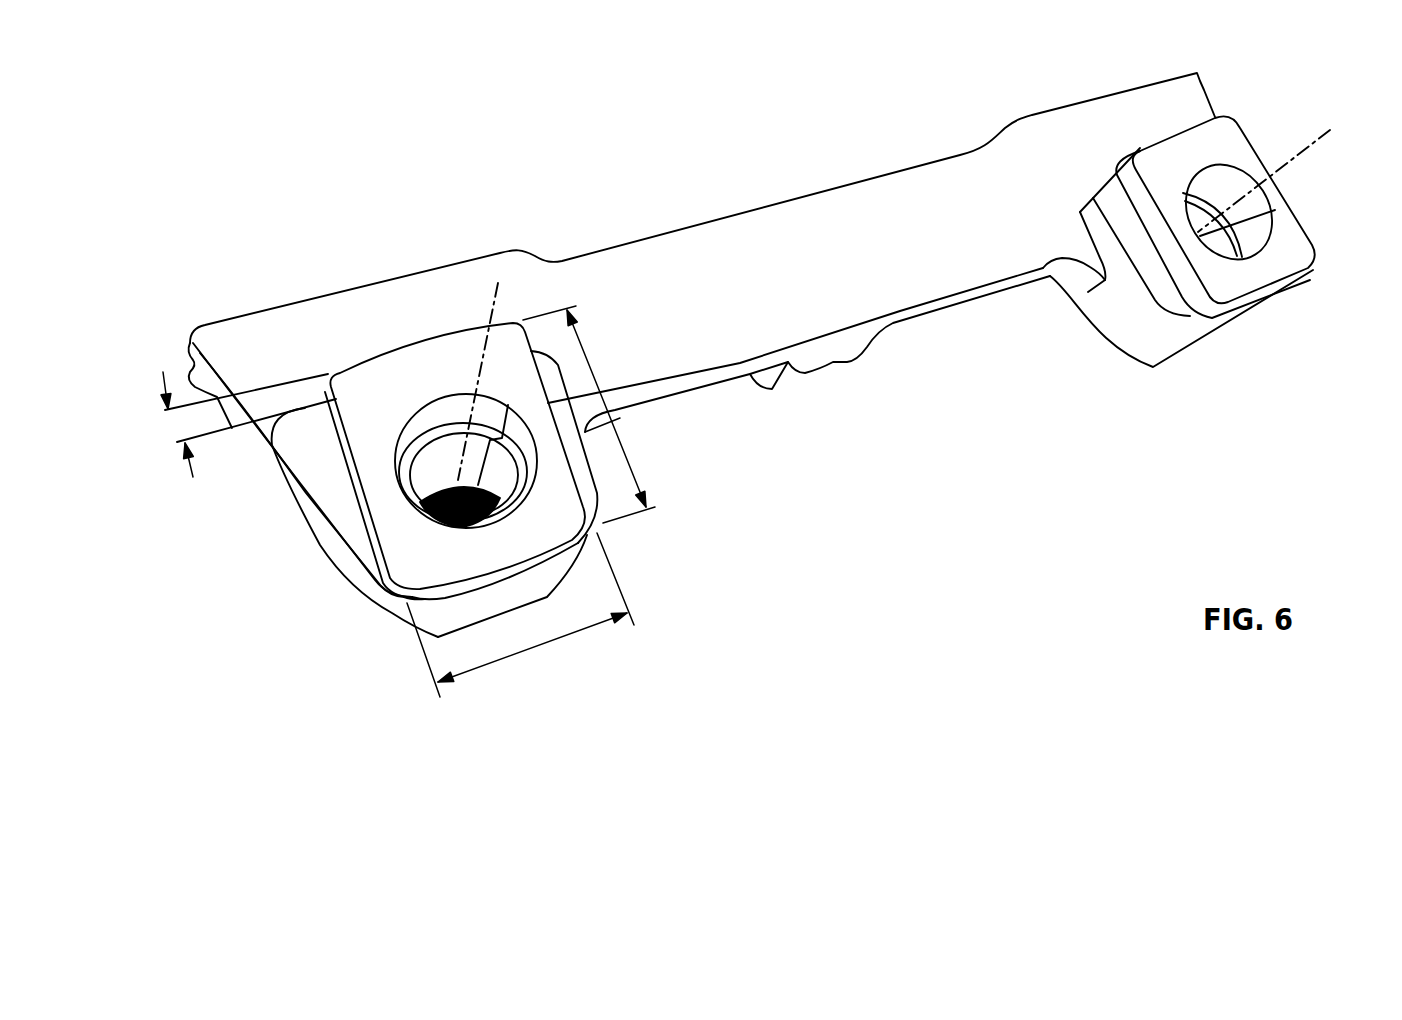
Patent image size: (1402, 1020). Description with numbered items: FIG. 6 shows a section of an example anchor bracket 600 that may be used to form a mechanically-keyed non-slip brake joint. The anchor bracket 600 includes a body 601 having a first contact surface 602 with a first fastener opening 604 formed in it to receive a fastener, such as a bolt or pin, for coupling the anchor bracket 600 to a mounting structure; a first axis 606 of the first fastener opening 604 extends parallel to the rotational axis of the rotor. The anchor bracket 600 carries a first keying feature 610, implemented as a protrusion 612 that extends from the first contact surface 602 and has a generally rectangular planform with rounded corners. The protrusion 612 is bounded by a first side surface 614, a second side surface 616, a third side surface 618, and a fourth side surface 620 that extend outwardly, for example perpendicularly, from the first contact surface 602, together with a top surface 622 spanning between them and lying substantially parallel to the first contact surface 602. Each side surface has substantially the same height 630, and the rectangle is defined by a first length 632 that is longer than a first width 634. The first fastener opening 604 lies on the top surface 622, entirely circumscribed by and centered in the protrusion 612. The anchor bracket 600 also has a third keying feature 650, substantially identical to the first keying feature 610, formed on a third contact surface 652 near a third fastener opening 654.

The anchor bracket 600 is at (897, 173).
The body 601 is at (760, 230).
The first contact surface 602 is at (390, 490).
The first fastener opening 604 is at (447, 422).
The first axis 606 is at (495, 298).
The first keying feature 610 is at (395, 426).
The protrusion 612 is at (349, 365).
The first side surface 614 is at (425, 338).
The second side surface 616 is at (350, 457).
The third side surface 618 is at (500, 572).
The fourth side surface 620 is at (585, 432).
The top surface 622 is at (408, 537).
The height 630 is at (163, 385).
The first length 632 is at (633, 468).
The first width 634 is at (513, 657).
The third keying feature 650 is at (1210, 229).
The third contact surface 652 is at (1115, 213).
The third fastener opening 654 is at (1220, 185).